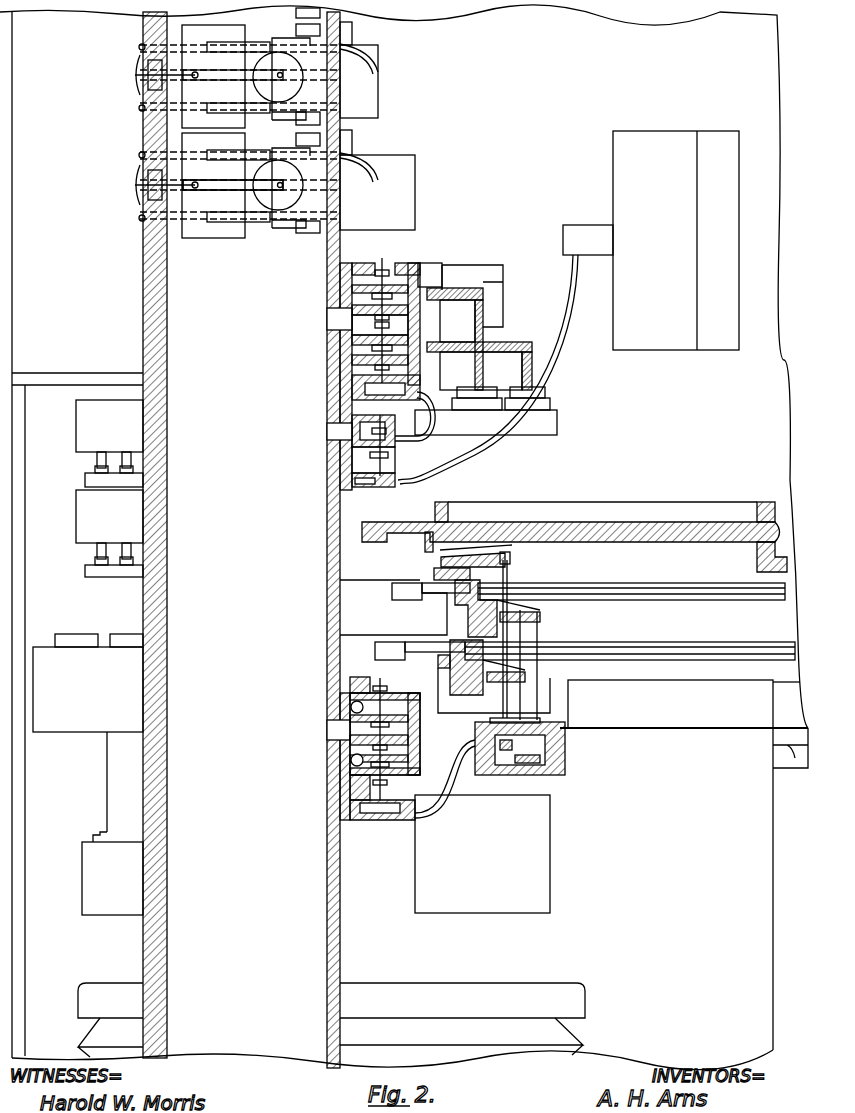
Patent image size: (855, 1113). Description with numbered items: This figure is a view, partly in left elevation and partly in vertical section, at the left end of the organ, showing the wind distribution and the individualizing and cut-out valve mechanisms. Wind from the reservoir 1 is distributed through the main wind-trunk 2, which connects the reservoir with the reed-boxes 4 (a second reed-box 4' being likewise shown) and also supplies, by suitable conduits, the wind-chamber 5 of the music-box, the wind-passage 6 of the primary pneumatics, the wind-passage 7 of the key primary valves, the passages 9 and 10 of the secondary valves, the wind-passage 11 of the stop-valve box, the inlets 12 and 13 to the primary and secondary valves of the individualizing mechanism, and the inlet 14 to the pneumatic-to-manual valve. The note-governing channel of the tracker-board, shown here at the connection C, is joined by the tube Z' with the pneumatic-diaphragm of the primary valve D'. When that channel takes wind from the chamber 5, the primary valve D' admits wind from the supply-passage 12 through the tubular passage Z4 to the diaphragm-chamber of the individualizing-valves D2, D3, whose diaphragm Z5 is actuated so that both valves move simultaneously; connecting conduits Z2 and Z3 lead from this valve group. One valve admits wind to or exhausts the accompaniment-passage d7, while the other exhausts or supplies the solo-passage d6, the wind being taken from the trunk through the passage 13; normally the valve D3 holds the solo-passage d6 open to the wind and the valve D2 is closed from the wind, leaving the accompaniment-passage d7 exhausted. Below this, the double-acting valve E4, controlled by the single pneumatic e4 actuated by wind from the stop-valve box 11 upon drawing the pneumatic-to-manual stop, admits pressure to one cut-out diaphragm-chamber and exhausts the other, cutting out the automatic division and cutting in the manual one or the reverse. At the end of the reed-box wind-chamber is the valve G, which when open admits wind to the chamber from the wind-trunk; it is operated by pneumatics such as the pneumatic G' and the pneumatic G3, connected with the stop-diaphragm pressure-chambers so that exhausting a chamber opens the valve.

The reservoir 1 is at (553, 1040).
The main wind-trunk 2 is at (241, 540).
The reed-box 4 is at (399, 70).
The cylinder 4' is at (414, 180).
The wind-chamber of the music-box 5 is at (648, 160).
The wind-passage of the primary pneumatics 6 is at (490, 285).
The wind-passage of the key primary valves 7 is at (570, 615).
The passage of the secondary valves 9 is at (109, 443).
The passage of the secondary valves 10 is at (109, 533).
The wind-passage of the stop-valve box 11 is at (567, 763).
The inlet to the primary valve of the individualizing mechanism 12 is at (337, 432).
The inlet to the secondary valves of the individualizing mechanism 13 is at (335, 320).
The inlet to the pneumatic-to-manual valve 14 is at (330, 727).
The connection C is at (587, 235).
The valve G is at (262, 68).
The pneumatic G' is at (225, 180).
The pneumatic G3 is at (198, 205).
The primary valve D' is at (407, 451).
The individualizing-valve D2 is at (372, 362).
The individualizing-valve D3 is at (370, 308).
The solo-passage d6 is at (480, 400).
The accompaniment-passage d7 is at (540, 393).
The double-acting valve E4 is at (352, 768).
The pneumatic e4 is at (371, 808).
The tube Z' is at (494, 369).
The pipe Z2 is at (447, 285).
The pipe Z3 is at (440, 345).
The tubular passage Z4 is at (435, 420).
The diaphragm Z5 is at (372, 385).